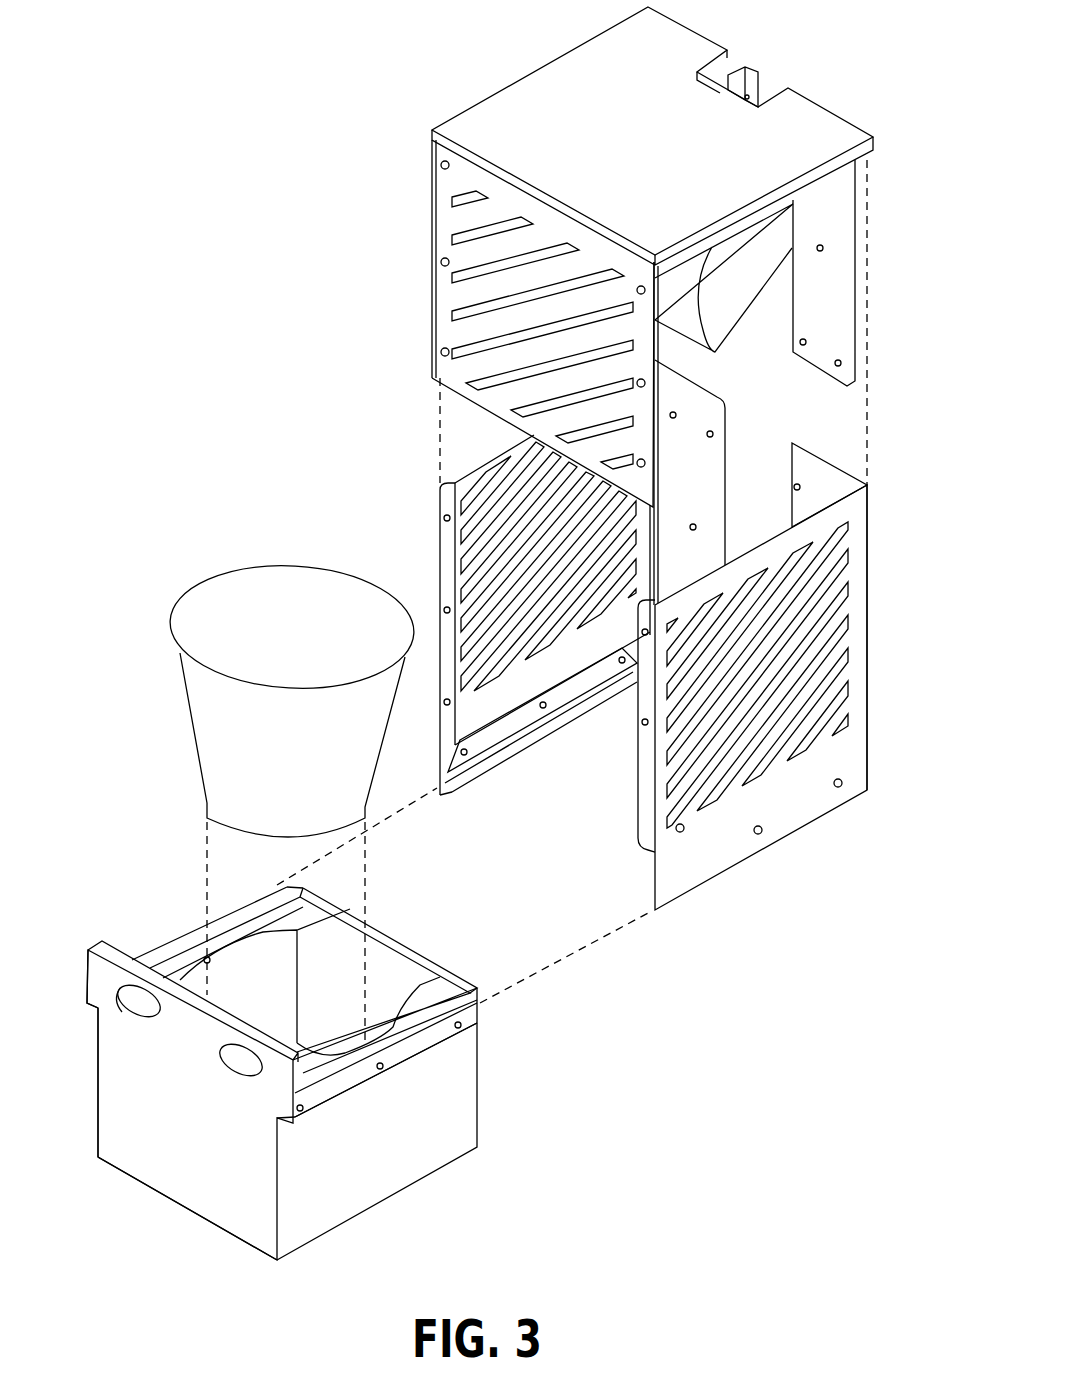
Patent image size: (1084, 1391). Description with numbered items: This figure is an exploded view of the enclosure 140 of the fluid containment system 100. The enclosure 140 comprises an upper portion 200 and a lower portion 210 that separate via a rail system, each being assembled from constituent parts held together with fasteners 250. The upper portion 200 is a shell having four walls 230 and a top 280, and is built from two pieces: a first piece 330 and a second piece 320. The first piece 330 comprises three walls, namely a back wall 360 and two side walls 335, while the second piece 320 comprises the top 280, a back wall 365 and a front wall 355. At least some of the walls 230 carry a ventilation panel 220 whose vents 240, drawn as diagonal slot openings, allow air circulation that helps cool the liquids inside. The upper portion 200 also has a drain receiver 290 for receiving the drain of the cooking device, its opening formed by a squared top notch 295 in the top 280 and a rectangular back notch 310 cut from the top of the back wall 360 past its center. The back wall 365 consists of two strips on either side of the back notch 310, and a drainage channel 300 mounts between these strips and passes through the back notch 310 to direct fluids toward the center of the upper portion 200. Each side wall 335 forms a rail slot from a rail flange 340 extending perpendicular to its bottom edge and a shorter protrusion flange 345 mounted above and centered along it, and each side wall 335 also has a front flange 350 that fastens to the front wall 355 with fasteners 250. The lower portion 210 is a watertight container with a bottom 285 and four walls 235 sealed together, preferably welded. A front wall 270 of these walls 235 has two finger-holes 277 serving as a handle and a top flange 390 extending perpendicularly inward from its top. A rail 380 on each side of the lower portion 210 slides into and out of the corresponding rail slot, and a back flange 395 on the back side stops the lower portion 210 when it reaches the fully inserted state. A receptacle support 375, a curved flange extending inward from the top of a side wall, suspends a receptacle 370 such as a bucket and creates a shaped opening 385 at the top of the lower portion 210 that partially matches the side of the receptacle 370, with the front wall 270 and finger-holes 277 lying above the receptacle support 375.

The storage and dispensing system 100 is at (240, 45).
The enclosure 140 is at (240, 115).
The upper portion 200 is at (273, 395).
The lower portion 210 is at (490, 1025).
The ventilation panel 220 is at (440, 240).
The walls 230 is at (432, 190).
The walls 235 is at (480, 1110).
The vent 240 is at (440, 305).
The fasteners 250 is at (440, 352).
The front wall 270 is at (100, 1140).
The finger-hole 277 is at (225, 1075).
The top 280 is at (535, 75).
The bottom 285 is at (385, 1200).
The drain receiver 290 is at (800, 75).
The top notch 295 is at (745, 100).
The drainage channel 300 is at (725, 345).
The back notch 310 is at (765, 460).
The second piece 320 is at (480, 85).
The first piece 330 is at (400, 560).
The side walls 335 is at (455, 447).
The rail flange 340 is at (530, 750).
The protrusion flange 345 is at (470, 780).
The front flange 350 is at (632, 830).
The front wall 355 is at (432, 160).
The back wall 360 is at (872, 465).
The back wall 365 is at (857, 268).
The receptacle 370 is at (185, 695).
The receptacle support 375 is at (280, 935).
The rail 380 is at (230, 905).
The opening 385 is at (400, 890).
The top flange 390 is at (110, 940).
The back flange 395 is at (445, 960).